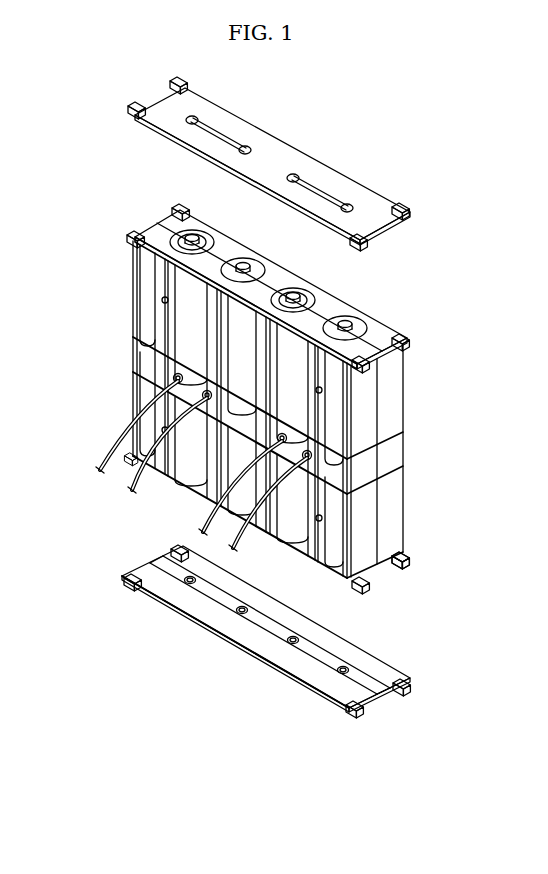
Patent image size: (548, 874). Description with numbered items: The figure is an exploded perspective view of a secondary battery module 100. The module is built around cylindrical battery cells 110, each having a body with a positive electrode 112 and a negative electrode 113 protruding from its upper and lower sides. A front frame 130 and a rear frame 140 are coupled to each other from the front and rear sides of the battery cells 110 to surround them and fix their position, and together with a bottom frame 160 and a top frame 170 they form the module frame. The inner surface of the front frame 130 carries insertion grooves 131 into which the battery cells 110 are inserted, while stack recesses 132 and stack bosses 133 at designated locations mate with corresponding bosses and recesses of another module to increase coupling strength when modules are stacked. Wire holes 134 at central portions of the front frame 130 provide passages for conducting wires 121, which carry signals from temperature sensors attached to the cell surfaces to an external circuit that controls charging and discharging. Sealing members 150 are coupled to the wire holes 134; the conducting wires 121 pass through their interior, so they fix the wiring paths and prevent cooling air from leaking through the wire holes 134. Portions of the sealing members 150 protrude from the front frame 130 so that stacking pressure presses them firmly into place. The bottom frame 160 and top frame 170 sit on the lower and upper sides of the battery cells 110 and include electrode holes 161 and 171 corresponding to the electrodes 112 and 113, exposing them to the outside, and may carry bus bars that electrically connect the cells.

The secondary battery module 100 is at (75, 76).
The battery cells 110 is at (401, 345).
The positive electrode 112 is at (295, 289).
The negative electrode 113 is at (357, 325).
The conducting wires 121 is at (134, 478).
The front frame 130 is at (373, 580).
The insertion grooves 131 is at (176, 236).
The stack recesses 132 is at (161, 299).
The stack bosses 133 is at (161, 428).
The wire holes 134 is at (173, 377).
The rear frame 140 is at (392, 571).
The sealing members 150 is at (205, 401).
The bottom frame 160 is at (304, 689).
The electrode holes 161 is at (281, 641).
The top frame 170 is at (372, 178).
The electrode holes 171 is at (297, 177).